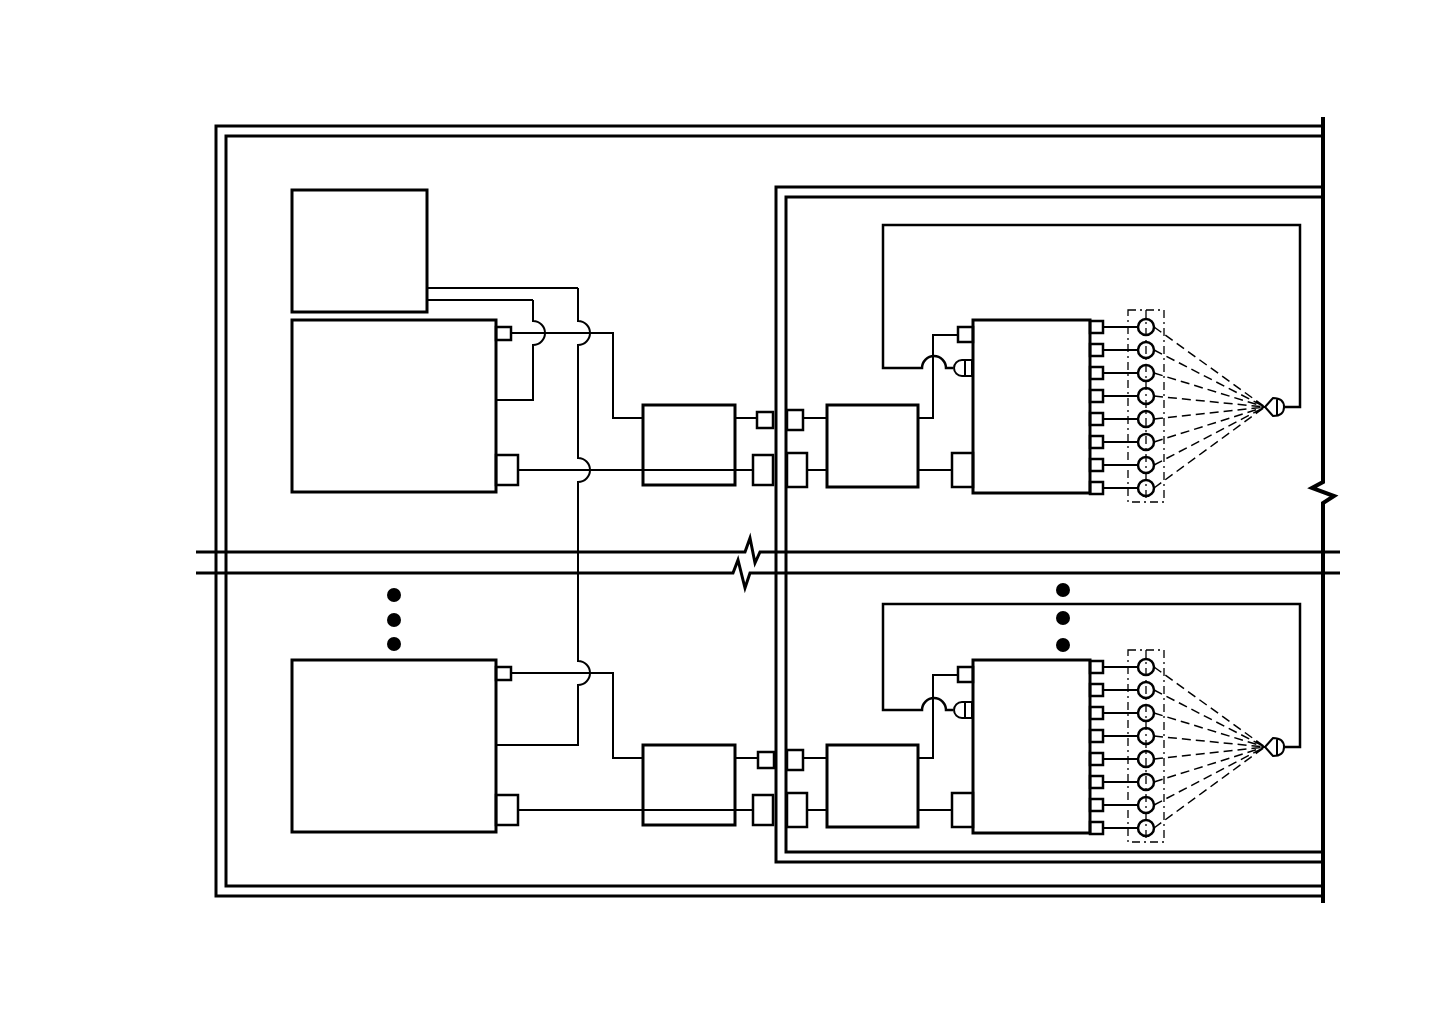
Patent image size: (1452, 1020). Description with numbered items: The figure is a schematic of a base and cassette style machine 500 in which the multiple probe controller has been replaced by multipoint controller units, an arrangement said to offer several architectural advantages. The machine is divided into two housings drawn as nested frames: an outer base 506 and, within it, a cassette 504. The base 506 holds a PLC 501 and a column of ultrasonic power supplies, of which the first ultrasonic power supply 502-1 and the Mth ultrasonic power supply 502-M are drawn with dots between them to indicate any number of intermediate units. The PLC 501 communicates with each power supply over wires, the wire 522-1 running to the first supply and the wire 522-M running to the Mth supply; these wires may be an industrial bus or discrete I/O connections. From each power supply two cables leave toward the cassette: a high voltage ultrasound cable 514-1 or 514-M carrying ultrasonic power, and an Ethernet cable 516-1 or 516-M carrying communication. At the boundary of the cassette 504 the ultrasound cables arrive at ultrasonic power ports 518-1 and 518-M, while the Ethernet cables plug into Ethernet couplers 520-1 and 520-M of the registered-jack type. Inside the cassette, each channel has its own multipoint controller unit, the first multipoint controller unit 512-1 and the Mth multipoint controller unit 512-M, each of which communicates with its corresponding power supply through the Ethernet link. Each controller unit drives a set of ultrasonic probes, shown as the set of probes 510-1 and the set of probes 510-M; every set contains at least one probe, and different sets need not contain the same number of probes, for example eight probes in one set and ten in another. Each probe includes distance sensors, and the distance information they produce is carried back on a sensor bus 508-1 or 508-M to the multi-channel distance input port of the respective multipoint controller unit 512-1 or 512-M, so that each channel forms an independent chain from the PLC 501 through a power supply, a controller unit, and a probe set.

The base and cassette style machine 500 is at (194, 82).
The PLC 501 is at (292, 204).
The ultrasonic power supply 502-1 is at (292, 334).
The ultrasonic power supply 502-M is at (292, 674).
The cassette 504 is at (1298, 187).
The base 506 is at (1298, 126).
The sensor bus 508-1 is at (1300, 363).
The sensor bus 508-M is at (1300, 703).
The set of ultrasonic probes 510-1 is at (1158, 311).
The set of ultrasonic probes 510-M is at (1158, 652).
The multipoint controller unit 512-1 is at (1000, 318).
The multipoint controller unit 512-M is at (1000, 658).
The high voltage ultrasound cable 514-1 is at (615, 356).
The high voltage ultrasound cable 514-M is at (615, 697).
The Ethernet cable 516-1 is at (540, 473).
The Ethernet cable 516-M is at (543, 812).
The ultrasonic power port 518-1 is at (758, 412).
The ultrasonic power port 518-M is at (758, 755).
The RJ-45 coupler 520-1 is at (752, 479).
The RJ-45 coupler 520-M is at (752, 820).
The wire 522-1 is at (533, 385).
The wire 522-M is at (580, 518).